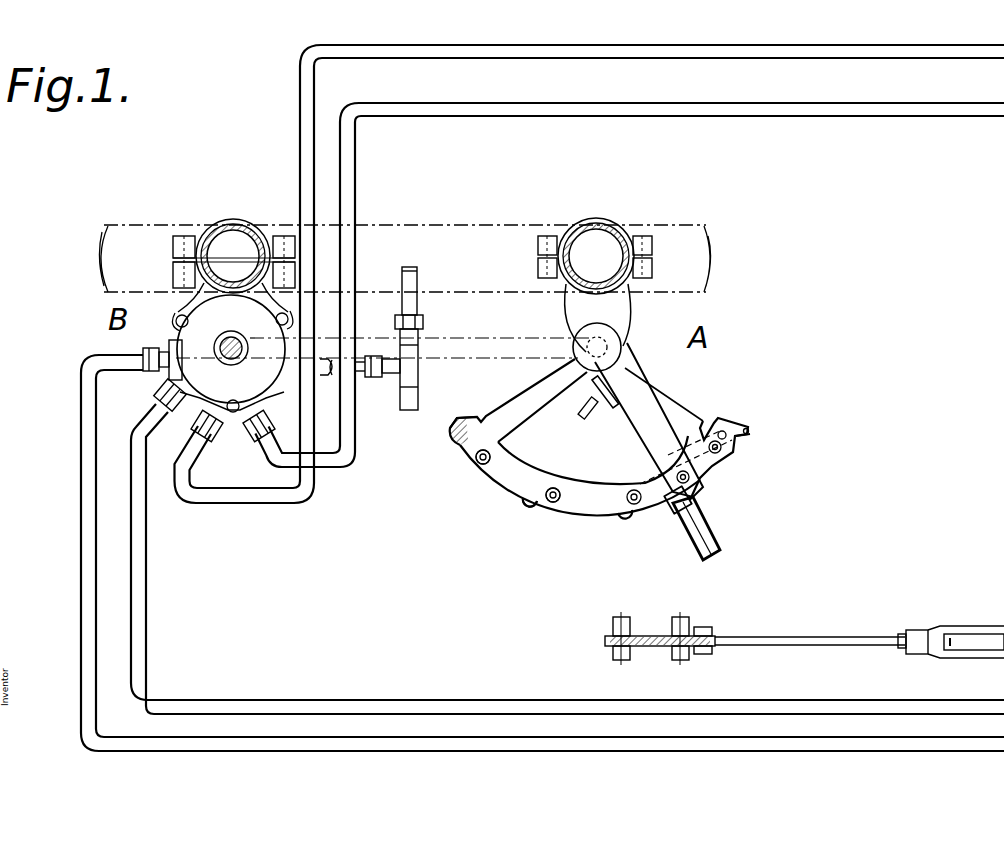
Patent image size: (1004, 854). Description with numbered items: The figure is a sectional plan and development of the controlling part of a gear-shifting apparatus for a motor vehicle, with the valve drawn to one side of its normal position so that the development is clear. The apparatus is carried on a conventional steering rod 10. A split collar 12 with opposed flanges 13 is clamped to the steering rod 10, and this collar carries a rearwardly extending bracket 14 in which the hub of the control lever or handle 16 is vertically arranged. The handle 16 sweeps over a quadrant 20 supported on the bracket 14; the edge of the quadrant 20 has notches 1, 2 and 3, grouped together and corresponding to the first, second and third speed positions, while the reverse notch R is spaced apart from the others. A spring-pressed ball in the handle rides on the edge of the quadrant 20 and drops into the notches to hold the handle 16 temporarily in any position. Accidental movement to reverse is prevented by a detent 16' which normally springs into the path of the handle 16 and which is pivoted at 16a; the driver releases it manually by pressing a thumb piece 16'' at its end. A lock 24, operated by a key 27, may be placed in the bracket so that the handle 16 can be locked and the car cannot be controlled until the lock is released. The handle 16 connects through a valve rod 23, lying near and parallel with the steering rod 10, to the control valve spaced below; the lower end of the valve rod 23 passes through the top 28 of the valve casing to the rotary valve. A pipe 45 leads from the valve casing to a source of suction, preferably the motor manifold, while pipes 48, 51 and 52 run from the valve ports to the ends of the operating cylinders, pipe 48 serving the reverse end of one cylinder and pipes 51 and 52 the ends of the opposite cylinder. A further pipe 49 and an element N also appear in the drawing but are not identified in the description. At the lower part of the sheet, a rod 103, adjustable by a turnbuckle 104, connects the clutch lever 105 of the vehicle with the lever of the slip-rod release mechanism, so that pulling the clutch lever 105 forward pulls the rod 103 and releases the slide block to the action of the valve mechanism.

The first speed notch 1 is at (619, 509).
The second speed notch 2 is at (533, 505).
The third speed notch 3 is at (463, 451).
The steering rod 10 is at (250, 224).
The split collar 12 is at (228, 220).
The opposed flanges 13 is at (168, 248).
The bracket 14 is at (616, 313).
The control lever or handle 16 is at (657, 451).
The detent 16' is at (729, 411).
The thumb piece 16'' is at (777, 416).
The detent pivot 16a is at (750, 440).
The quadrant 20 is at (576, 512).
The valve rod 23 is at (242, 358).
The lock 24 is at (611, 409).
The key 27 is at (580, 414).
The top of valve casing 28 is at (176, 334).
The suction pipe 45 is at (362, 374).
The pipe 48 is at (272, 459).
The pipe 49 is at (192, 465).
The pipe 51 is at (140, 525).
The pipe 52 is at (88, 512).
The rod 103 is at (814, 645).
The turnbuckle 104 is at (984, 626).
The clutch lever 105 is at (652, 636).
The nut N is at (690, 490).
The reverse notch R is at (728, 462).